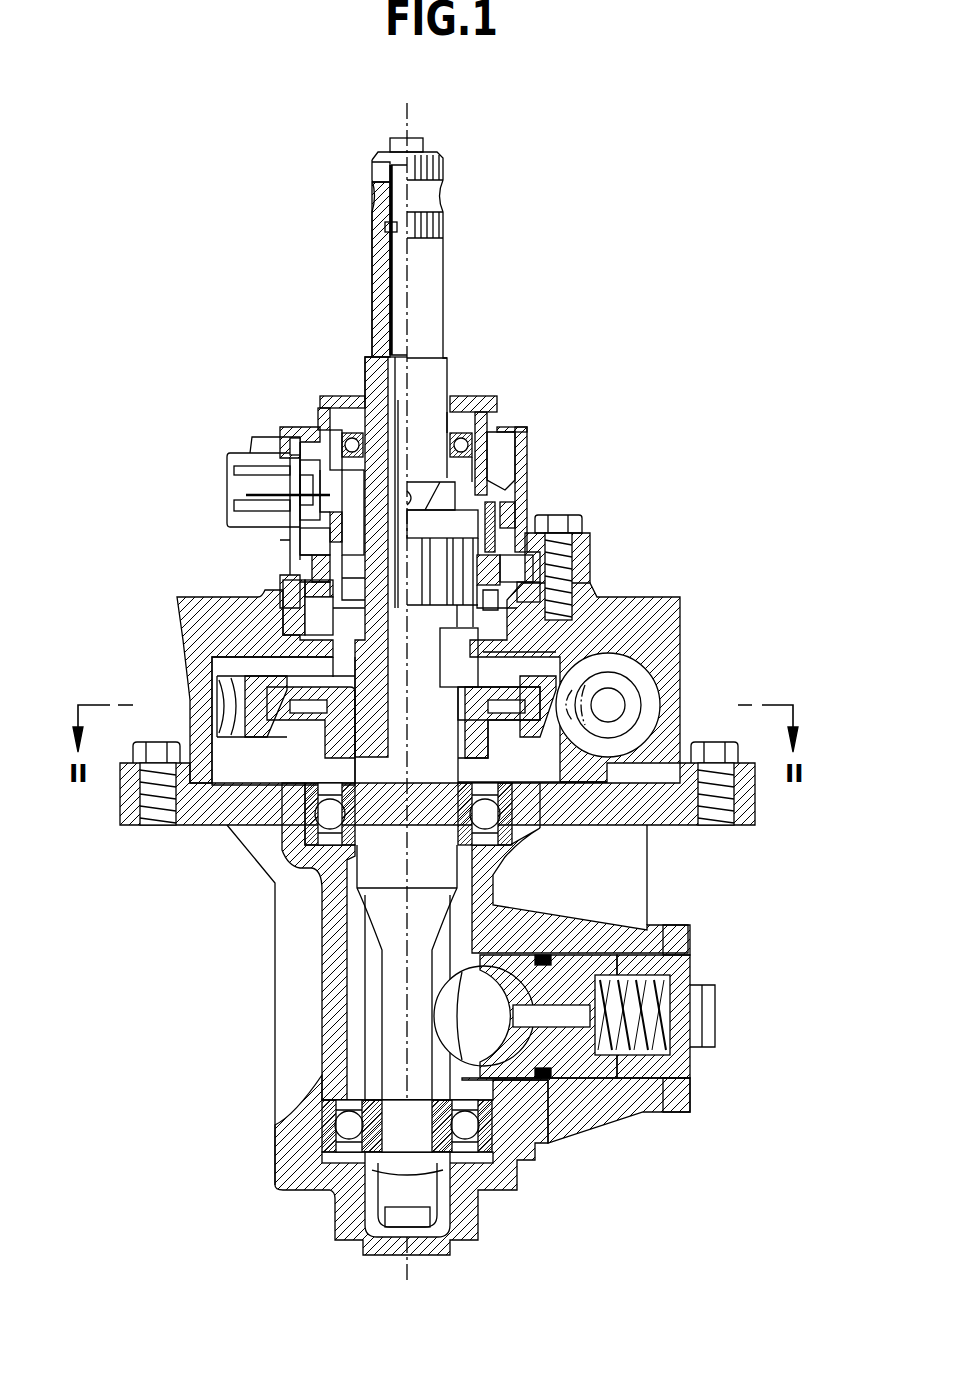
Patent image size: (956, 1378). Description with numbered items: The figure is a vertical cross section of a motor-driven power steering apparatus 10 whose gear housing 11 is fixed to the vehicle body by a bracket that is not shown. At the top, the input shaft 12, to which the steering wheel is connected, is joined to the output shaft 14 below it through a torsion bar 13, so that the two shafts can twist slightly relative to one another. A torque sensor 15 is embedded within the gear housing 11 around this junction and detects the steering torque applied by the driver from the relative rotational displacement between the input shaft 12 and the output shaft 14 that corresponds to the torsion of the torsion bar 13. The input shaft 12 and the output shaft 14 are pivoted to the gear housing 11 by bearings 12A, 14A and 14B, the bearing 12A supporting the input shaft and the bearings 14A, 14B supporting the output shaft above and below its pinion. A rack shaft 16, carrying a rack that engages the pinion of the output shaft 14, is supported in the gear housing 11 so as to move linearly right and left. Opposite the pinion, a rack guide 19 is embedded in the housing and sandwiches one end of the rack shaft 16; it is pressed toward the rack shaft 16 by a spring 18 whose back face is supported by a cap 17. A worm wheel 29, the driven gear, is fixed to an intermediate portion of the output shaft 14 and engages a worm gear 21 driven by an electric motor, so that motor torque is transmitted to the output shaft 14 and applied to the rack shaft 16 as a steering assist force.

The motor-driven power steering apparatus 10 is at (180, 336).
The gear housing 11 is at (757, 810).
The input shaft 12 is at (375, 226).
The bearing 12A is at (340, 422).
The torsion bar 13 is at (397, 278).
The output shaft 14 is at (365, 872).
The bearing 14A is at (283, 858).
The bearing 14B is at (348, 1125).
The torque sensor 15 is at (240, 450).
The rack shaft 16 is at (482, 1022).
The cap 17 is at (692, 983).
The spring 18 is at (690, 1076).
The rack guide 19 is at (575, 978).
The worm gear 21 is at (612, 690).
The worm wheel 29 is at (213, 690).